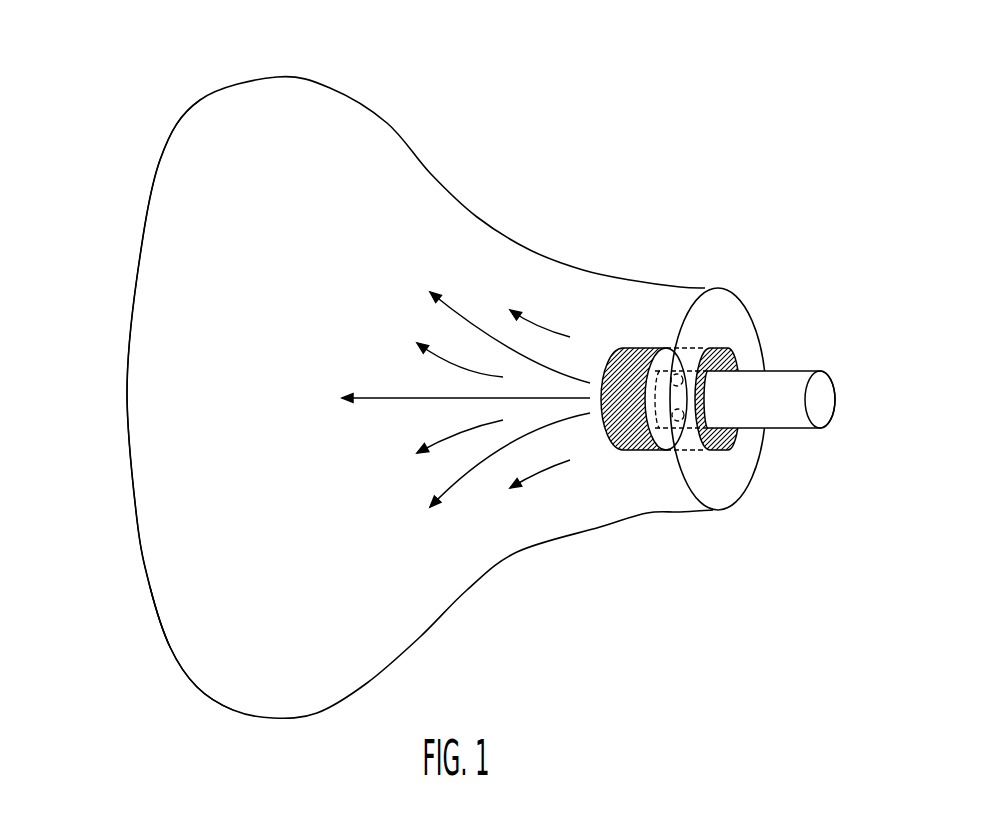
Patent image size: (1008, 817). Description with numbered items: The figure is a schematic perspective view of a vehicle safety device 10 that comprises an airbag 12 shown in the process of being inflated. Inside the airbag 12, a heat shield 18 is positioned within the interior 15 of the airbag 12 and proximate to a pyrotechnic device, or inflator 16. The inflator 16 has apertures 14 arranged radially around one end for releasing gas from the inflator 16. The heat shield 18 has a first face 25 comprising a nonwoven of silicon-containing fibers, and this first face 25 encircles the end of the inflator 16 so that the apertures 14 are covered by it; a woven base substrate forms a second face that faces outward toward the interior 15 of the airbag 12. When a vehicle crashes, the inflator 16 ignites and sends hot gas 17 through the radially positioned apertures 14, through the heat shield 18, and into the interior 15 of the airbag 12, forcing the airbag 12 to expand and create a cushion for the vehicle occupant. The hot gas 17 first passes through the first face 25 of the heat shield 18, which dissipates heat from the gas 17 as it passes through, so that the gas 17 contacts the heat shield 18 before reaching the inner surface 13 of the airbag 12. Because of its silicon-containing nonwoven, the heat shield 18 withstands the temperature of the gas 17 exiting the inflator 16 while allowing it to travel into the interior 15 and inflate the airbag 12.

The vehicle safety device 10 is at (247, 42).
The airbag 12 is at (370, 80).
The inner surface 13 is at (180, 660).
The apertures 14 is at (681, 422).
The interior 15 is at (198, 473).
The inflator 16 is at (793, 368).
The gas 17 is at (453, 503).
The heat shield 18 is at (648, 348).
The first face 25 is at (635, 435).